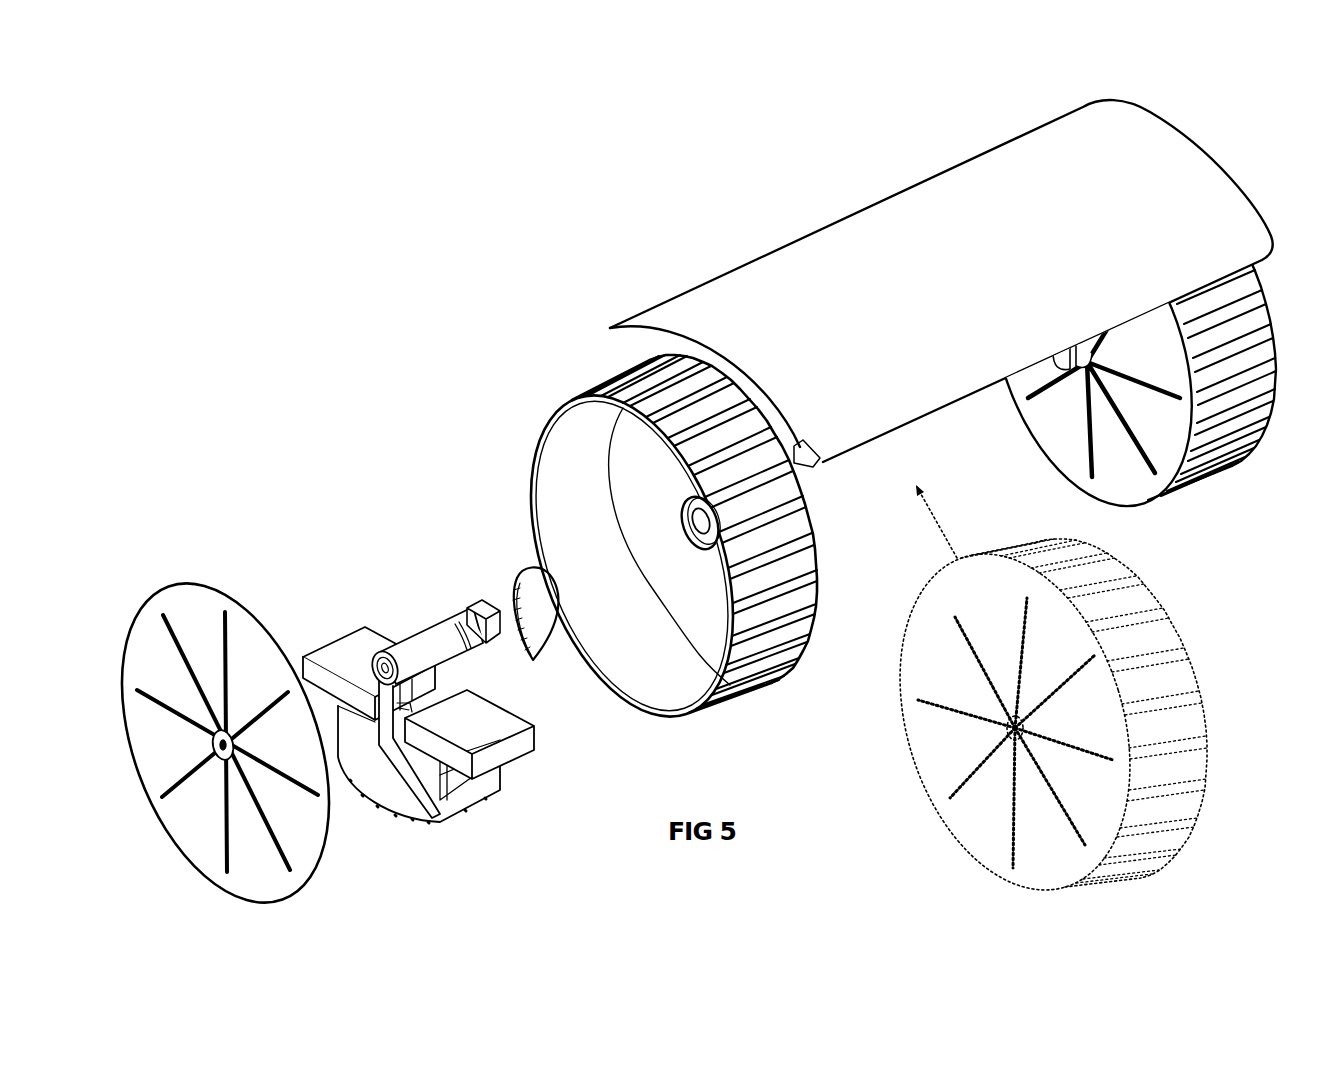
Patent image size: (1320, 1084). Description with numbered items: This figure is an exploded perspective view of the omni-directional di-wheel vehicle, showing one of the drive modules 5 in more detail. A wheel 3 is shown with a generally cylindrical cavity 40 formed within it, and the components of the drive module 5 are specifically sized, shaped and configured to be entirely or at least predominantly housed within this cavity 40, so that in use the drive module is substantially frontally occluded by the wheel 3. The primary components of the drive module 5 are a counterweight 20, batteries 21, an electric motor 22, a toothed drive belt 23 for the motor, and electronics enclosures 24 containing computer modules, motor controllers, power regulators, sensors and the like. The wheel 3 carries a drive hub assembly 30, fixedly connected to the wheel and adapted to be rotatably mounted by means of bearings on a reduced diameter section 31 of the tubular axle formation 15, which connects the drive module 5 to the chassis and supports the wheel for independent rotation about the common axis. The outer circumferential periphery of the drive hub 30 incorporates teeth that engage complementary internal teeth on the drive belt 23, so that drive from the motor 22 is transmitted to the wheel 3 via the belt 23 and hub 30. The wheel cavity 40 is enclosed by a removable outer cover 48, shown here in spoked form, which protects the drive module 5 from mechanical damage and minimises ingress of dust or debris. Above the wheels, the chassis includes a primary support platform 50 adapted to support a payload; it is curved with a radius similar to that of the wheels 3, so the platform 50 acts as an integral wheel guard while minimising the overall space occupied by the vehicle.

The wheel 3 is at (1212, 492).
The drive module 5 is at (303, 525).
The tubular axle formation 15 is at (471, 630).
The counterweight 20 is at (395, 787).
The batteries 21 is at (427, 780).
The electric motor 22 is at (440, 705).
The toothed drive belt 23 is at (516, 572).
The electronics enclosure 24 is at (362, 640).
The drive hub assembly 30 is at (680, 518).
The reduced diameter section 31 is at (475, 644).
The cylindrical cavity 40 is at (675, 535).
The outer cover 48 is at (198, 837).
The primary support platform 50 is at (790, 257).